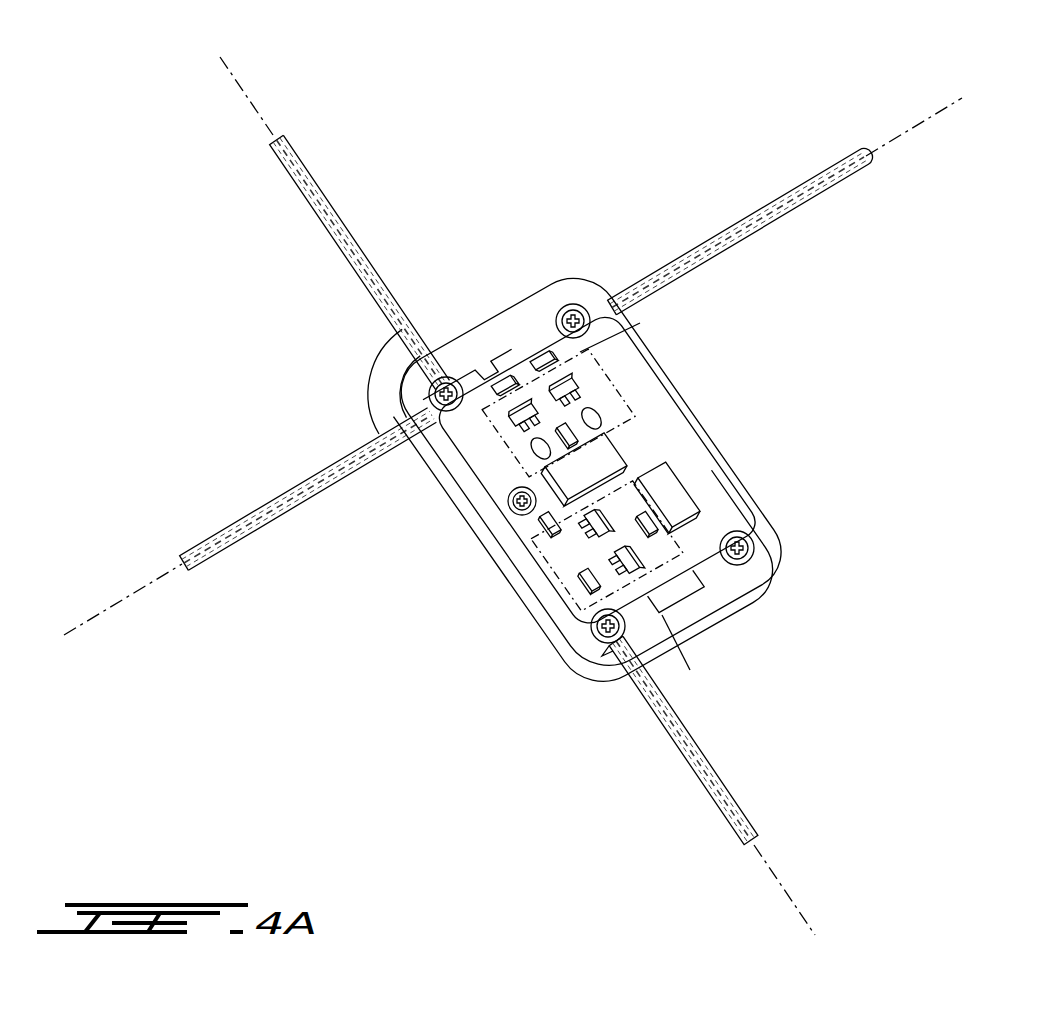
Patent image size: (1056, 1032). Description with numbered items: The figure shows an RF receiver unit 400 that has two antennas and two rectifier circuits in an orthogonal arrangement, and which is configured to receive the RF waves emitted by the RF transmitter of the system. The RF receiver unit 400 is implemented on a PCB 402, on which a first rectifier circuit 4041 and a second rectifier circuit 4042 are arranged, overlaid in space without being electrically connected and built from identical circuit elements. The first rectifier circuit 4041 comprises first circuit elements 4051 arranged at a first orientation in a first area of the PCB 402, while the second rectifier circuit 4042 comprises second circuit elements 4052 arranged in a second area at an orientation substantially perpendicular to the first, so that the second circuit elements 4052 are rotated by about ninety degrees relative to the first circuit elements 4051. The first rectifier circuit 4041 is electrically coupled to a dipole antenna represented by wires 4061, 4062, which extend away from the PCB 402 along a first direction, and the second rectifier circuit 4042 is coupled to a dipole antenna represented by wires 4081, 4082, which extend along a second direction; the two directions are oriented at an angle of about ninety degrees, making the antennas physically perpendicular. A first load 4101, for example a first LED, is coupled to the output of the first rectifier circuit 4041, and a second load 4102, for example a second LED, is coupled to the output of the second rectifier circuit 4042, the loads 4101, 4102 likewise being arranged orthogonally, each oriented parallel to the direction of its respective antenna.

The RF receiver unit 400 is at (903, 90).
The PCB 402 is at (745, 522).
The first rectifier circuit 4041 is at (613, 375).
The second rectifier circuit 4042 is at (675, 575).
The first circuit elements 4051 is at (556, 390).
The second circuit elements 4052 is at (615, 552).
The wire 4061 is at (228, 546).
The wire 4062 is at (830, 192).
The wire 4081 is at (282, 153).
The wire 4082 is at (697, 770).
The first load 4101 is at (597, 447).
The second load 4102 is at (680, 512).